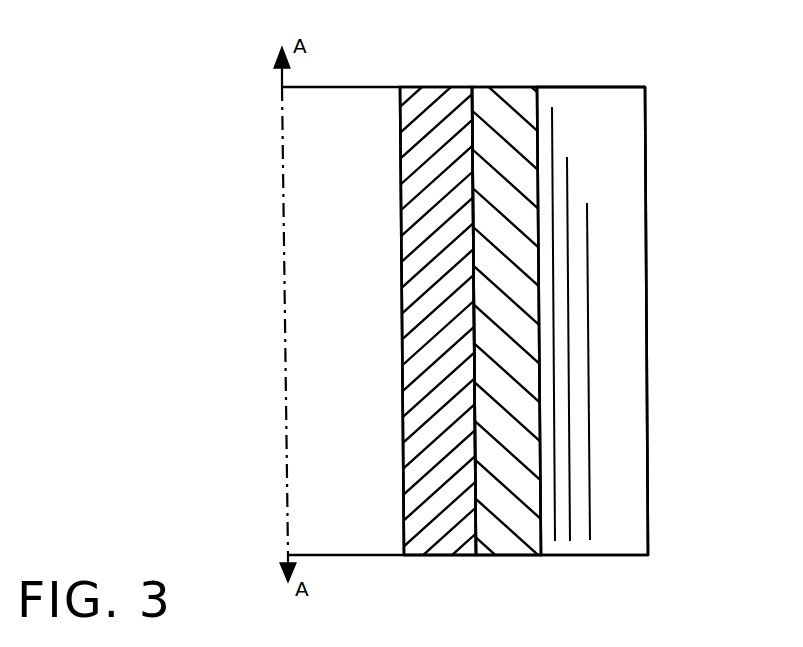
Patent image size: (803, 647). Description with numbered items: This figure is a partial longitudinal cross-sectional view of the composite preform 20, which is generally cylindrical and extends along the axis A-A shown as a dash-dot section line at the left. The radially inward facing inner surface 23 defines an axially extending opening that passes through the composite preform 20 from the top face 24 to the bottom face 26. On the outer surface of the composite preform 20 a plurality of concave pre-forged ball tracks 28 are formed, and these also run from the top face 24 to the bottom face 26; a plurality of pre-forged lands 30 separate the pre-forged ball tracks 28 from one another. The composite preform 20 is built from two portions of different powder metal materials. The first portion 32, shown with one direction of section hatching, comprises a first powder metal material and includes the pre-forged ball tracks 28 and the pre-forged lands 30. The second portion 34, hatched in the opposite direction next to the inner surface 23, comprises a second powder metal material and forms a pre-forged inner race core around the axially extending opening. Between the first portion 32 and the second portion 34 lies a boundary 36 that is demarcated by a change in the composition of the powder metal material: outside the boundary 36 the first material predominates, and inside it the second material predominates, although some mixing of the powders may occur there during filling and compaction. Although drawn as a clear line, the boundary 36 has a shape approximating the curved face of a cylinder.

The composite preform 20 is at (674, 85).
The inner surface 23 is at (402, 243).
The top face 24 is at (570, 87).
The bottom face 26 is at (527, 555).
The pre-forged ball tracks 28 is at (615, 188).
The pre-forged lands 30 is at (647, 278).
The first portion 32 is at (523, 104).
The second portion 34 is at (425, 112).
The boundary 36 is at (473, 97).